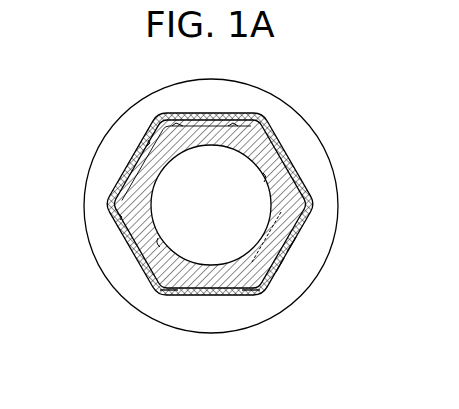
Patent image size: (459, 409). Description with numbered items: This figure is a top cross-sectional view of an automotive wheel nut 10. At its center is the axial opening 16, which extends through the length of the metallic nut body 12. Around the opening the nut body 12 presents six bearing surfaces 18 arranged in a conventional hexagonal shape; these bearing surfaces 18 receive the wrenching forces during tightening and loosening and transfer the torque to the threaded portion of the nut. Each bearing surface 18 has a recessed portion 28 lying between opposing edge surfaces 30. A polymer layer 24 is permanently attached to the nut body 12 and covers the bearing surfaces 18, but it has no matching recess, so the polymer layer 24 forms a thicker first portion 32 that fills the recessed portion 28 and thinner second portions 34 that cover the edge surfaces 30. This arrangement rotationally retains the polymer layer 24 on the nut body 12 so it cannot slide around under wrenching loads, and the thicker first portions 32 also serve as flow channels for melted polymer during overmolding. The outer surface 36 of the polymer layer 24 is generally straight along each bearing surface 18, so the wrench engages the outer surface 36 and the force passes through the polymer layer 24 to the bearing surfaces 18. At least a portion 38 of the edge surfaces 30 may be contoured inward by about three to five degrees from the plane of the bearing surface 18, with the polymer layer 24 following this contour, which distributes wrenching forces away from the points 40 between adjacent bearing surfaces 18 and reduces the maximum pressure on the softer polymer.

The automotive wheel nut 10 is at (310, 88).
The nut body 12 is at (306, 190).
The axial opening 16 is at (217, 232).
The bearing surfaces 18 is at (158, 242).
The polymer layer 24 is at (292, 244).
The recessed portion 28 is at (268, 224).
The edge surfaces 30 is at (177, 124).
The thicker first portion 32 is at (281, 262).
The thinner second portions 34 is at (172, 297).
The outer surface 36 is at (126, 171).
The contoured edge surface portion 38 is at (105, 199).
The points between adjacent bearing surfaces 40 is at (107, 206).